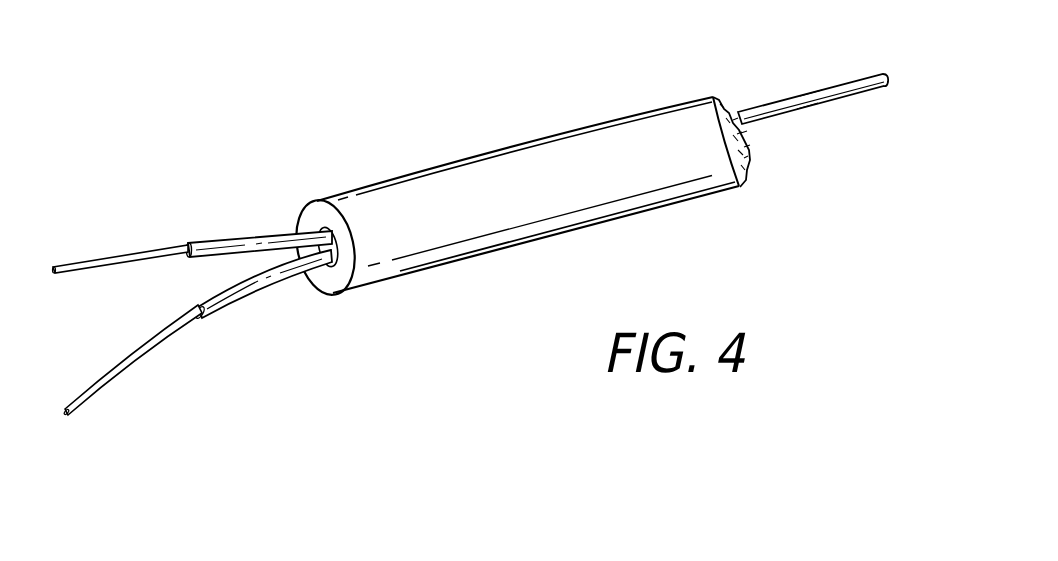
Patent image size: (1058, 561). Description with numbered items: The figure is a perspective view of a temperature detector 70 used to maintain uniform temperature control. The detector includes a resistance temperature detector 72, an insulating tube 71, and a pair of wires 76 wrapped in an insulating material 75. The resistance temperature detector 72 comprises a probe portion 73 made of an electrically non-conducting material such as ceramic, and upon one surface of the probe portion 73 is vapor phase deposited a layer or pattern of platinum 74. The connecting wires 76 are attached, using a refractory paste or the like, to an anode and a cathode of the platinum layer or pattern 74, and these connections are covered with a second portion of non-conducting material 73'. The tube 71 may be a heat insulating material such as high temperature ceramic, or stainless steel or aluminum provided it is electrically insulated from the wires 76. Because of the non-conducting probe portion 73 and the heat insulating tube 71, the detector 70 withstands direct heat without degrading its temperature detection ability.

The temperature detector 70 is at (533, 120).
The insulating tube 71 is at (480, 257).
The resistance temperature detector (RTD) 72 is at (832, 75).
The probe portion 73 is at (794, 67).
The second portion of non-conducting material 73' is at (776, 184).
The platinum layer or pattern 74 is at (807, 104).
The insulating material 75 is at (227, 238).
The wires 76 is at (120, 256).